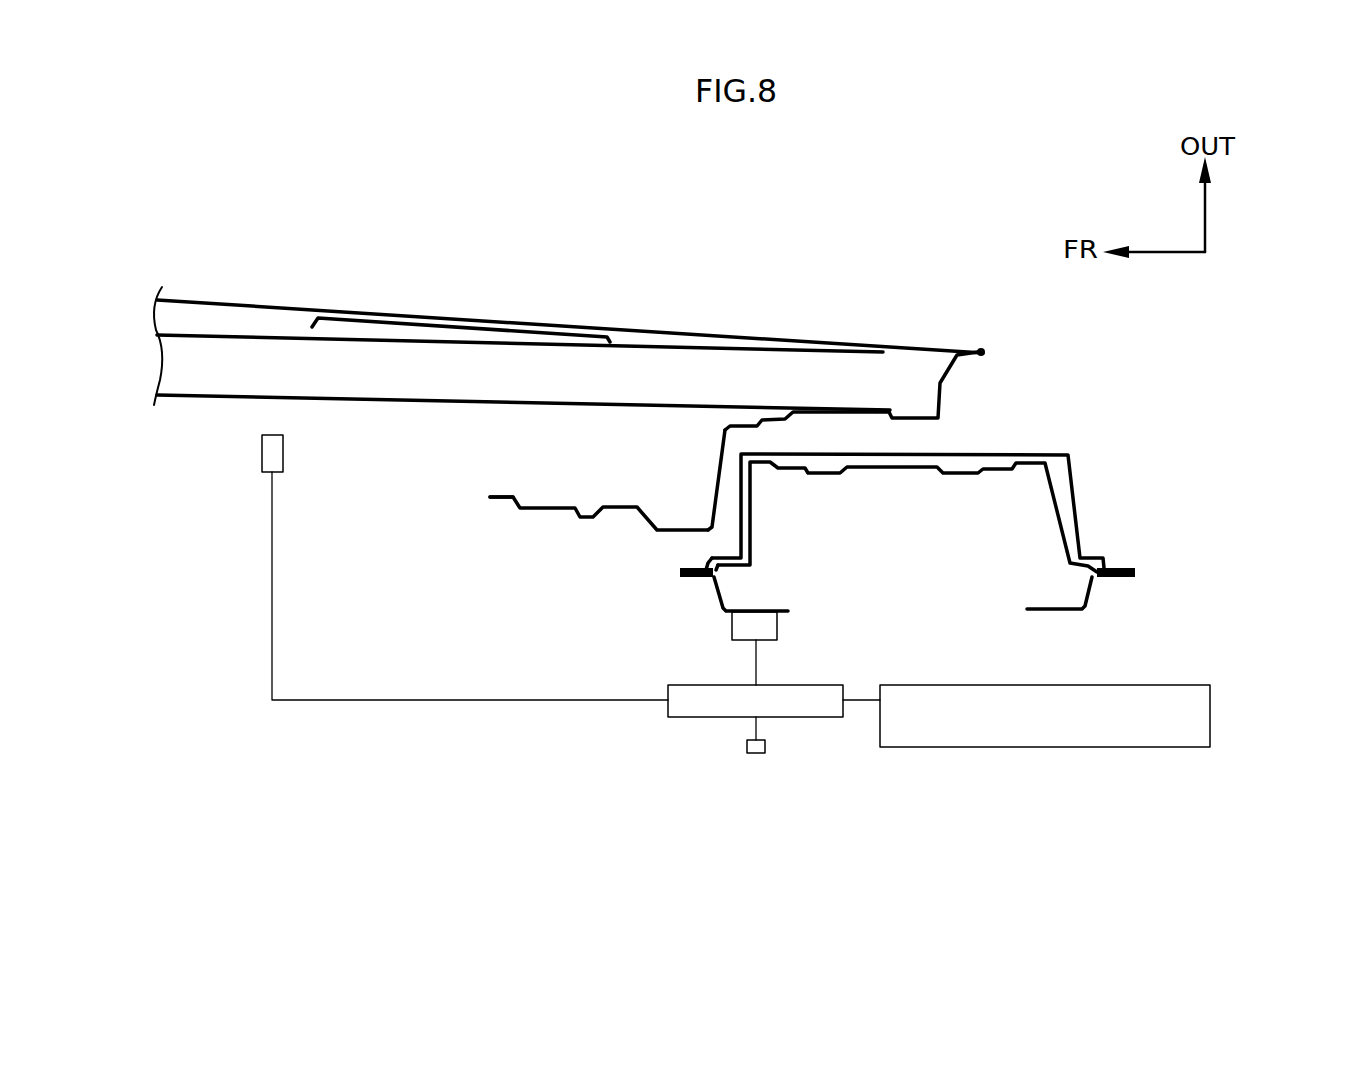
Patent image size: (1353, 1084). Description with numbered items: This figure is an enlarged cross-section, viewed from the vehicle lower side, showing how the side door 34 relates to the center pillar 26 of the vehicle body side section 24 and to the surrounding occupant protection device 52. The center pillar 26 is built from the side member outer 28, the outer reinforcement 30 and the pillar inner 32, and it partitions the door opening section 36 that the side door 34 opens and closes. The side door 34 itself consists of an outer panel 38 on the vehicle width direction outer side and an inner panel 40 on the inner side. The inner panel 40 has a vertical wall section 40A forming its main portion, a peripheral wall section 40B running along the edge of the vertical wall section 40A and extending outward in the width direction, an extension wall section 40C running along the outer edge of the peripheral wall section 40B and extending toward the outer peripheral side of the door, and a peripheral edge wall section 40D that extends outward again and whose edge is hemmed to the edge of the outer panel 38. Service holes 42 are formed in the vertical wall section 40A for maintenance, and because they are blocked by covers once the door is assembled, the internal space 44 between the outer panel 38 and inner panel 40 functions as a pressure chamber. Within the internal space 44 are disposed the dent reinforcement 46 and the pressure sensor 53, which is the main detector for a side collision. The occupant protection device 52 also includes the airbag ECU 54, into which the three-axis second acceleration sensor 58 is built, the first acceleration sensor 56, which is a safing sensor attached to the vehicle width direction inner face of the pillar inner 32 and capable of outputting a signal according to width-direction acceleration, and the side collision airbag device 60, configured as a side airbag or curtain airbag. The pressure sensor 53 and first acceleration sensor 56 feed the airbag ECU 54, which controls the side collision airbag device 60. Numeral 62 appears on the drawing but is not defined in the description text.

The vehicle body side section 24 is at (918, 497).
The center pillar 26 is at (1090, 494).
The side member outer panel 28 is at (906, 466).
The center pillar outer reinforcement 30 is at (968, 478).
The center pillar inner panel 32 is at (1060, 610).
The front side door 34 is at (569, 319).
The door opening section 36 is at (680, 573).
The outer panel 38 is at (703, 327).
The inner panel 40 is at (689, 485).
The vertical wall section 40A is at (537, 503).
The peripheral wall section 40B is at (717, 473).
The extension wall section 40C is at (748, 424).
The peripheral edge wall section 40D is at (940, 388).
The service holes 42 is at (490, 497).
The internal space 44 is at (417, 456).
The dent reinforcement 46 is at (238, 398).
The occupant protection device 52 is at (774, 658).
The pressure sensor 53 is at (275, 435).
The airbag electronic control unit (ECU) 54 is at (668, 692).
The first acceleration sensor 56 is at (768, 625).
The second acceleration sensor 58 is at (752, 755).
The side collision airbag device 60 is at (1210, 700).
The door impact beam 62 is at (468, 320).